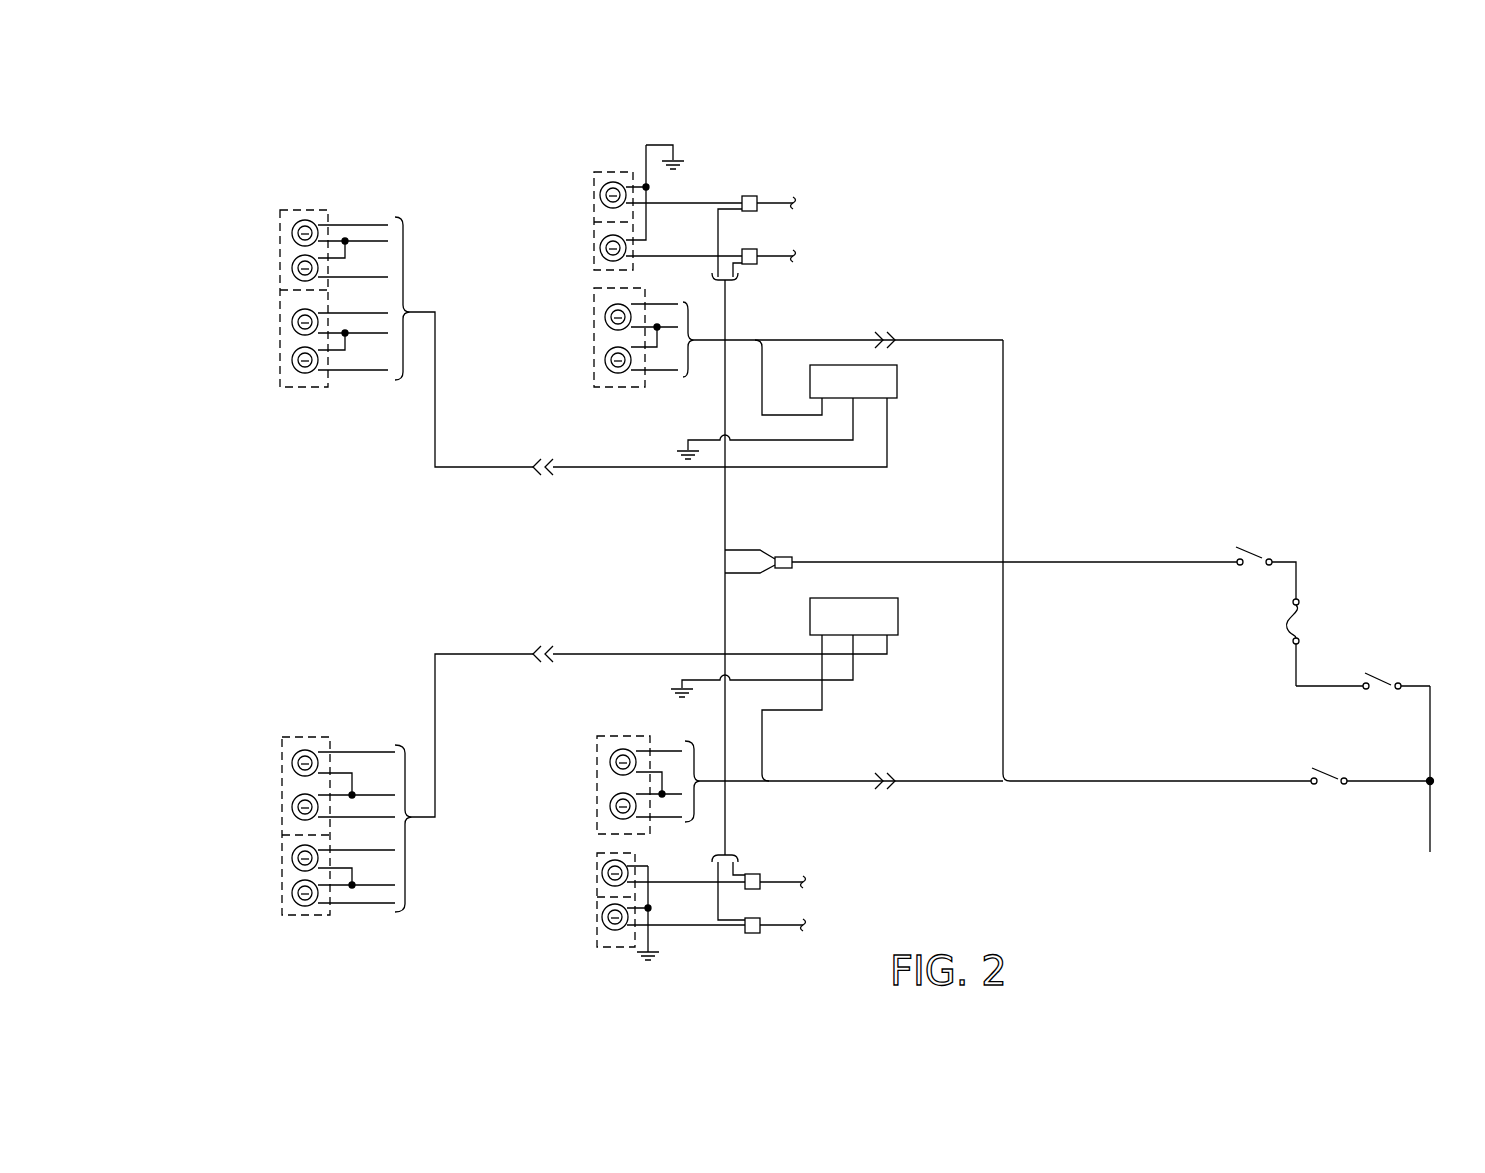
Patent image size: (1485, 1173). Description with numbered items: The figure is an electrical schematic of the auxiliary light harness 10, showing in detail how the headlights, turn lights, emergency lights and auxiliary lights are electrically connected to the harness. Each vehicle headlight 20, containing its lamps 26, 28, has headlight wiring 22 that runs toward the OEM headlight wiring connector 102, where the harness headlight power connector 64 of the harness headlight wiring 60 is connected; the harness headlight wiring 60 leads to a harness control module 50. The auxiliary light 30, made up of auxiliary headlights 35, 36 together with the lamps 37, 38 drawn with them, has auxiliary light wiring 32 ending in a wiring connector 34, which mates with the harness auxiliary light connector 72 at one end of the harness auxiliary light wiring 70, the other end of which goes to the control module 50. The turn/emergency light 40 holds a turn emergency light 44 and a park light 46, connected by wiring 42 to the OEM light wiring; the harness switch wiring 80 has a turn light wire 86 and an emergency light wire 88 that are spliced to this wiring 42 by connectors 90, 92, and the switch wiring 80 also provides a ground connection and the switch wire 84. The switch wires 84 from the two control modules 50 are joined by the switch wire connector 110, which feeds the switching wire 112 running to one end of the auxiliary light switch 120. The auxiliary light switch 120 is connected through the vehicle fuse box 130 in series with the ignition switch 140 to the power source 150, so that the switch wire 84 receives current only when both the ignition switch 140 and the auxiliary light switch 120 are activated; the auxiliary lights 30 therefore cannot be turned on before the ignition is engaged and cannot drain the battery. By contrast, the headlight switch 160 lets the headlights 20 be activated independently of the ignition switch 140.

The auxiliary light harness 10 is at (1020, 303).
The headlight 20 is at (585, 340).
The headlight wiring 22 is at (740, 340).
The high beam lamp 26 is at (603, 313).
The low beam lamp 28 is at (603, 372).
The auxiliary light 30 is at (265, 305).
The auxiliary light wiring 32 is at (432, 433).
The wiring connector 34 is at (538, 470).
The auxiliary headlight 35 is at (293, 367).
The auxiliary headlight 36 is at (293, 330).
The lamp 37 is at (293, 230).
The lamp 38 is at (293, 268).
The turn/emergency light 40 is at (583, 213).
The wiring 42 is at (687, 257).
The turn emergency light 44 is at (603, 188).
The park light 46 is at (603, 250).
The harness control module 50 is at (848, 365).
The harness headlight wiring 60 is at (780, 407).
The harness headlight power connector 64 is at (881, 337).
The harness auxiliary light wiring 70 is at (623, 470).
The harness auxiliary light connector 72 is at (550, 475).
The harness switch wiring 80 is at (860, 427).
The switch wire 84 is at (747, 572).
The turn light wire 86 is at (720, 240).
The emergency light wire 88 is at (737, 273).
The connector 90 is at (753, 198).
The connector 92 is at (757, 257).
The OEM headlight wiring connector 102 is at (893, 340).
The switch wire connector 110 is at (785, 560).
The switching wire 112 is at (1066, 561).
The auxiliary light switch 120 is at (1248, 570).
The fuse box 130 is at (1307, 604).
The ignition switch 140 is at (1381, 694).
The power source 150 is at (1428, 850).
The headlight switch 160 is at (1322, 765).